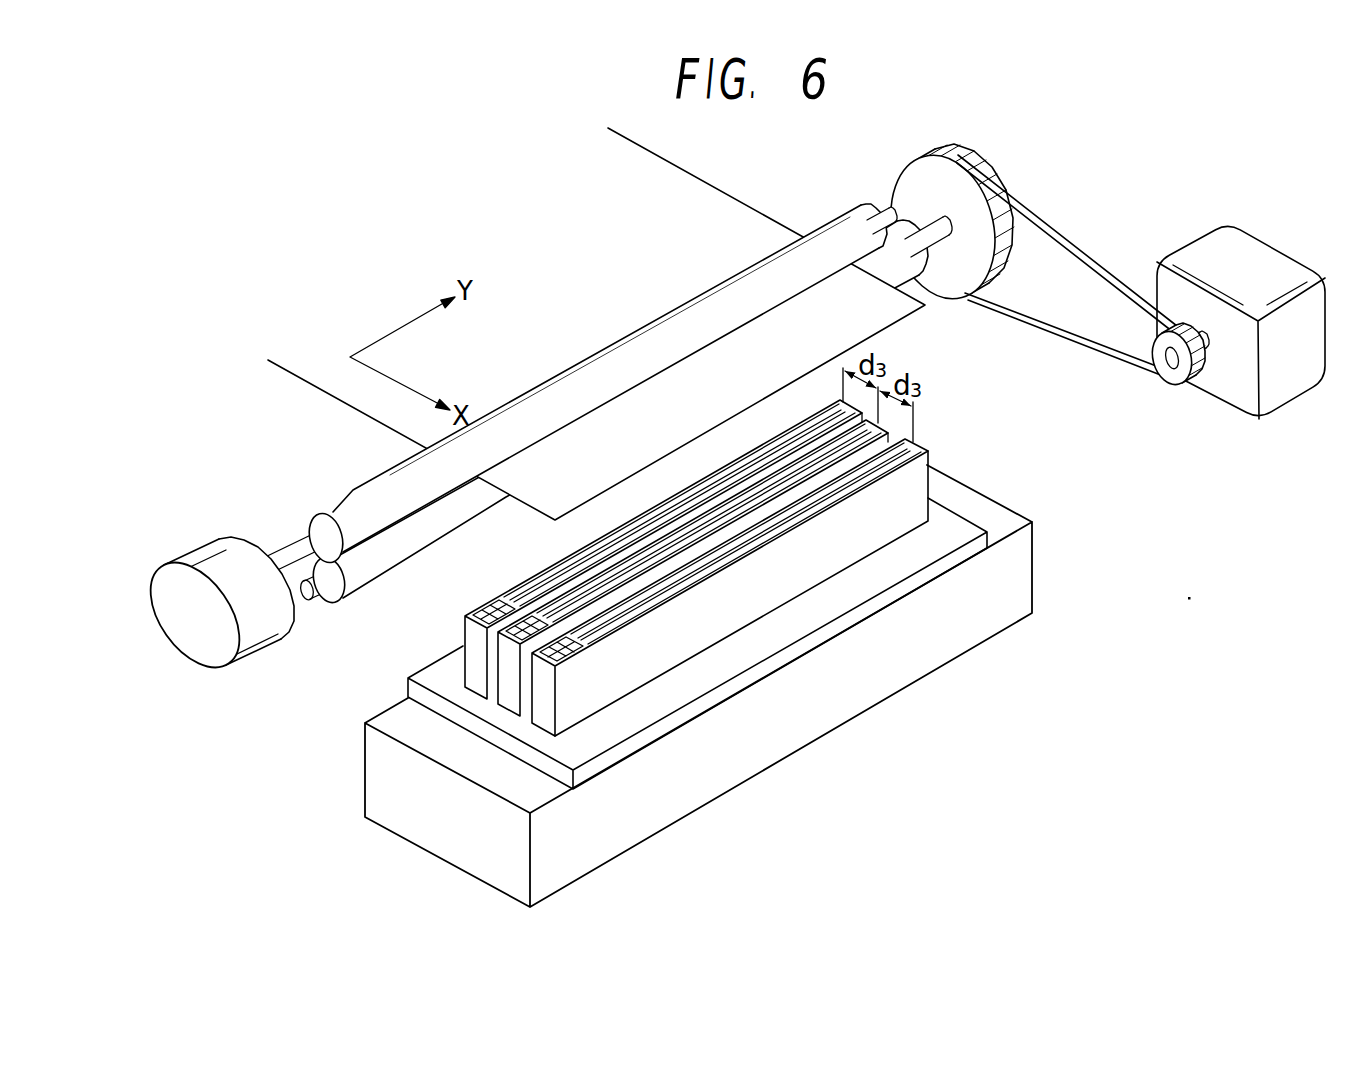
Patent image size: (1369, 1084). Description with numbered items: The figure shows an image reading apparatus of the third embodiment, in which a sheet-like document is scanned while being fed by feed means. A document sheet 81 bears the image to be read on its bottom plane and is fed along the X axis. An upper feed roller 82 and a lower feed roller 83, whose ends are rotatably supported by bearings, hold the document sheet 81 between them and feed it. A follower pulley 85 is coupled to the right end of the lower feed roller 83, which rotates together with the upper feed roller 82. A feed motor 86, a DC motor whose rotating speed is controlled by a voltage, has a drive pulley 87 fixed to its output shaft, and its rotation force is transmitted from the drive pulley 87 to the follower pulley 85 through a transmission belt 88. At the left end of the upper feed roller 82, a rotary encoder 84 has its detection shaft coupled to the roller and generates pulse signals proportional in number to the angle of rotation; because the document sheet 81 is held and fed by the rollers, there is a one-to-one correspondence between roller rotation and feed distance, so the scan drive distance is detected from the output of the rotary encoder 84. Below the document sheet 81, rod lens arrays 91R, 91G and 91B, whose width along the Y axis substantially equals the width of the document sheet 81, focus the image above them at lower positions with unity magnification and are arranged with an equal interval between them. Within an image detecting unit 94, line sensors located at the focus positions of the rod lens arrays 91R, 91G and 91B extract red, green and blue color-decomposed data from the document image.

The document sheet 81 is at (333, 385).
The upper feed roller 82 is at (357, 495).
The lower feed roller 83 is at (403, 552).
The rotary encoder 84 is at (213, 545).
The follower pulley 85 is at (898, 190).
The feed motor 86 is at (1245, 252).
The drive pulley 87 is at (1180, 384).
The transmission belt 88 is at (1088, 250).
The rod lens array 91R is at (820, 410).
The rod lens array 91G is at (893, 427).
The rod lens array 91B is at (925, 447).
The image detecting unit 94 is at (1000, 520).